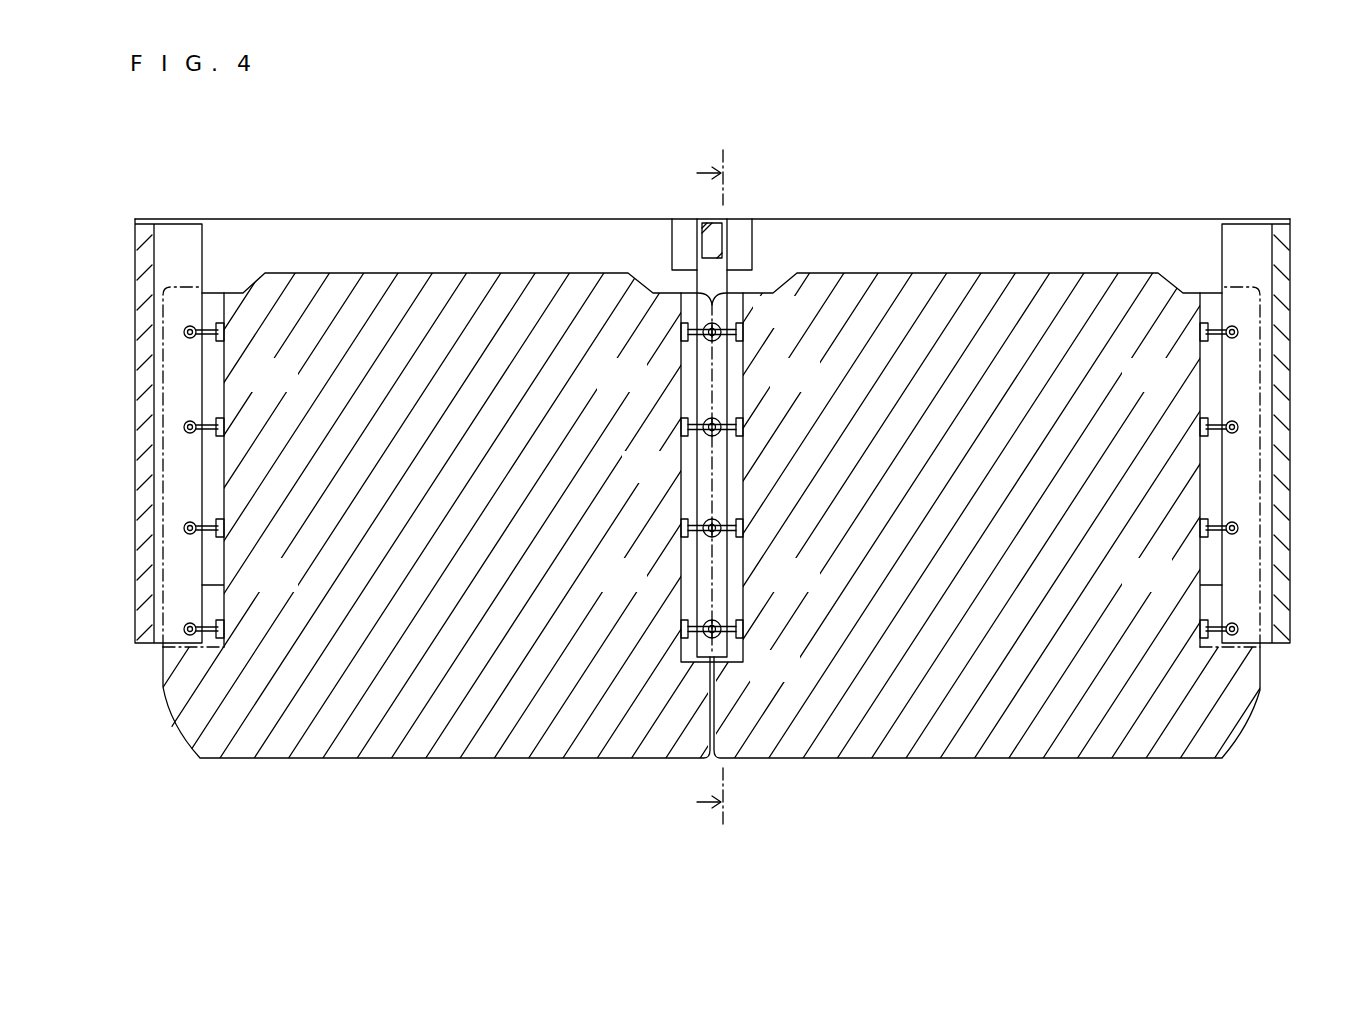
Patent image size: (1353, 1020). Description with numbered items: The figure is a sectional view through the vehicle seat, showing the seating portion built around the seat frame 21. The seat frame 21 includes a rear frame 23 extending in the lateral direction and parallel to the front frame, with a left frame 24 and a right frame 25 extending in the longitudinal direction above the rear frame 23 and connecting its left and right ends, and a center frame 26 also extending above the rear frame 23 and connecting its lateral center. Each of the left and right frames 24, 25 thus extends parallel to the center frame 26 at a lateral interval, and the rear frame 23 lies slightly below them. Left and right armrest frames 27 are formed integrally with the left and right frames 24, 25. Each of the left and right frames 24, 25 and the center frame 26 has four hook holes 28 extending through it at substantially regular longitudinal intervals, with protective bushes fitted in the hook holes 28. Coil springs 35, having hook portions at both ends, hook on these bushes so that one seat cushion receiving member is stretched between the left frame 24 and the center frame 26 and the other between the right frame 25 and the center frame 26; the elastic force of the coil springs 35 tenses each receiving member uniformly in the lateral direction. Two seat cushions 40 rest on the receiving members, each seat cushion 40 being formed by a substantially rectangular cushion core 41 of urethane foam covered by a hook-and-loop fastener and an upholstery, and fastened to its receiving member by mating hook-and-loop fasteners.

The seat frame 21 is at (471, 206).
The rear frame 23 is at (1030, 233).
The left frame 24 is at (1255, 472).
The right frame 25 is at (175, 472).
The center frame 26 is at (710, 273).
The armrest frame 27 is at (145, 250).
The hook hole 28 is at (186, 330).
The coil spring 35 is at (224, 340).
The seat cushion 40 is at (407, 760).
The cushion core 41 is at (470, 722).